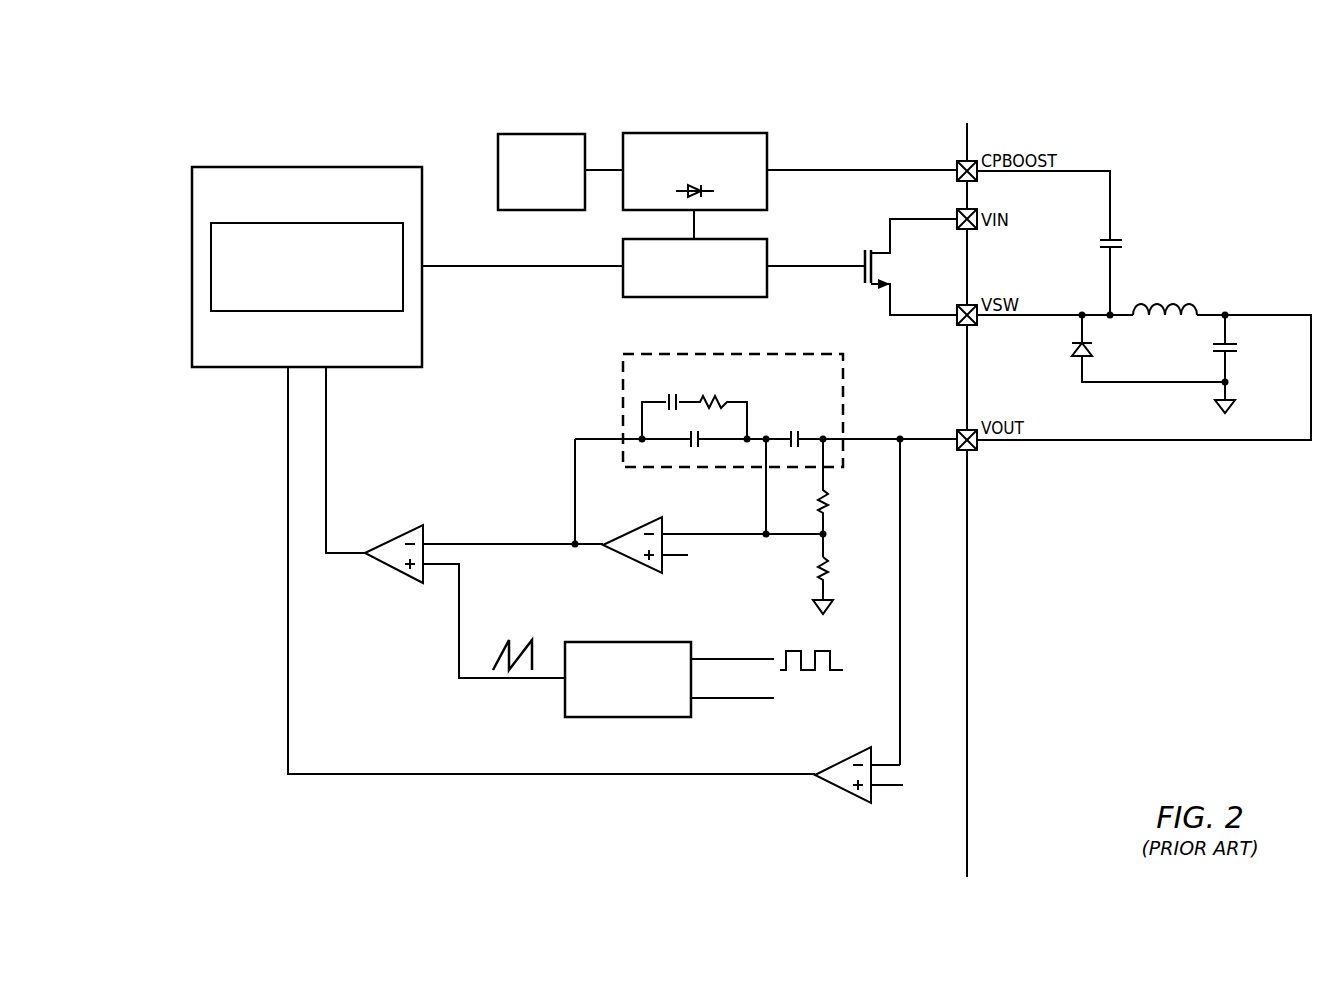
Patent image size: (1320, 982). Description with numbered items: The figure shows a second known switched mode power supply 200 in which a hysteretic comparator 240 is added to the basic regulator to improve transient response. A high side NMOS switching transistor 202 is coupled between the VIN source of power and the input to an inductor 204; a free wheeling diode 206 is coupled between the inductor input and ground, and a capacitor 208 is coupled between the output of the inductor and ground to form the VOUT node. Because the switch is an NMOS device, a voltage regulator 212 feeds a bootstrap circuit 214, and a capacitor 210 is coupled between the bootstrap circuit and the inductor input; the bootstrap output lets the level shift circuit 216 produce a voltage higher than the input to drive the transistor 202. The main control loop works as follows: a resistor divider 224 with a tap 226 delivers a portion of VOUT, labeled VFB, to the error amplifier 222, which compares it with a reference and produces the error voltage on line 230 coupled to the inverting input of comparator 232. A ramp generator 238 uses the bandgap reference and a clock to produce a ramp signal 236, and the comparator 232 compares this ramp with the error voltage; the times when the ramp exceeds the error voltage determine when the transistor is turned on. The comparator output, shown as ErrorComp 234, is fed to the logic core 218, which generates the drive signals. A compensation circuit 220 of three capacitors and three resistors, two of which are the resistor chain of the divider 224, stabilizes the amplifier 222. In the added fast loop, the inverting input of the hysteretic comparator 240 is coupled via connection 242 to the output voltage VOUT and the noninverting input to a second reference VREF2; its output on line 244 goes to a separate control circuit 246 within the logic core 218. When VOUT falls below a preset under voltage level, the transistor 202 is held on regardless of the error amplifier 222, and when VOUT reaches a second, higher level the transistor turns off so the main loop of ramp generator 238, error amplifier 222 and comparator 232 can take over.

The switched mode power supply 200 is at (1238, 131).
The switching transistor 202 is at (863, 256).
The inductor 204 is at (1175, 302).
The free wheeling diode 206 is at (1076, 352).
The capacitor 208 is at (1240, 349).
The capacitor 210 is at (1125, 244).
The voltage regulator 212 is at (541, 134).
The bootstrap circuit 214 is at (703, 133).
The level shift circuit 216 is at (680, 297).
The logic core 218 is at (294, 160).
The compensation circuit 220 is at (614, 391).
The error amplifier 222 is at (630, 573).
The resistor divider 224 is at (829, 501).
The tap 226 is at (818, 557).
The line 230 is at (574, 493).
The comparator 232 is at (393, 581).
The ErrorComp signal line 234 is at (327, 486).
The ramp signal 236 is at (503, 679).
The ramp generator 238 is at (628, 718).
The hysteretic comparator 240 is at (845, 795).
The output voltage feedback line 242 is at (899, 702).
The line 244 is at (287, 694).
The control circuit 246 is at (303, 311).